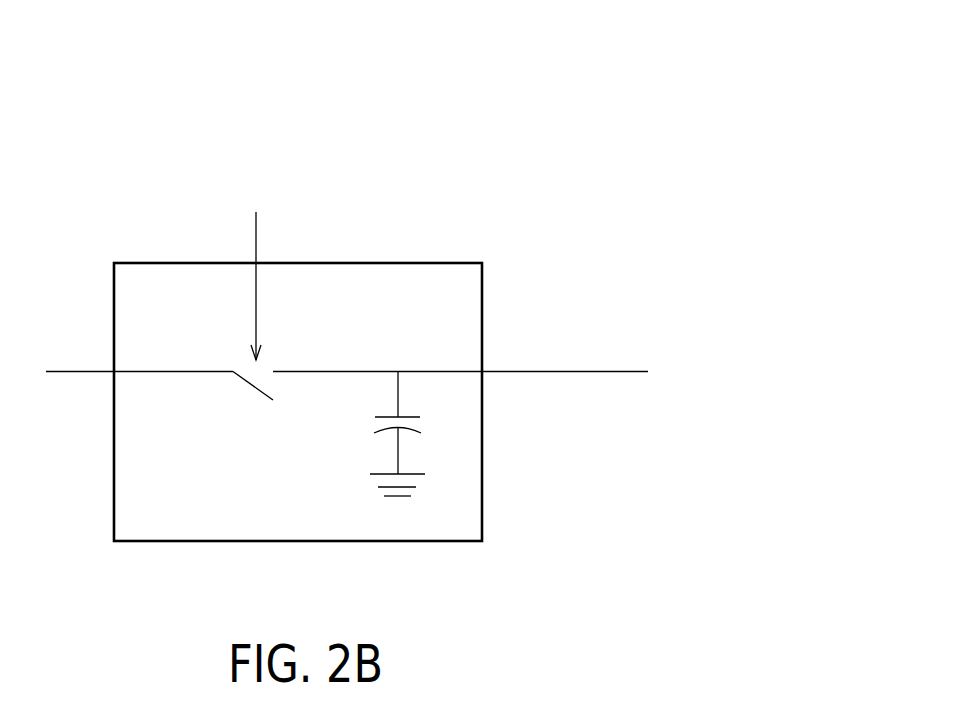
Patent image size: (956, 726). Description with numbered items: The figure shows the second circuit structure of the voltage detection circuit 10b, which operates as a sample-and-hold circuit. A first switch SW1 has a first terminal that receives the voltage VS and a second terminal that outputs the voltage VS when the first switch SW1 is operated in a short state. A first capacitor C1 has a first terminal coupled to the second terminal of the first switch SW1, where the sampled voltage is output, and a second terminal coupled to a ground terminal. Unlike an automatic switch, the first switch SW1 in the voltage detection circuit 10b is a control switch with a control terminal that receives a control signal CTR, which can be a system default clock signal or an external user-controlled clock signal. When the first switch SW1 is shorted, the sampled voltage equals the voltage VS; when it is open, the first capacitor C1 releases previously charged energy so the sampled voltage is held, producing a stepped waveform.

The voltage detection circuit 10b is at (538, 212).
The voltage VS is at (139, 357).
The first switch SW1 is at (258, 405).
The control signal CTR is at (254, 269).
The first capacitor C1 is at (374, 434).